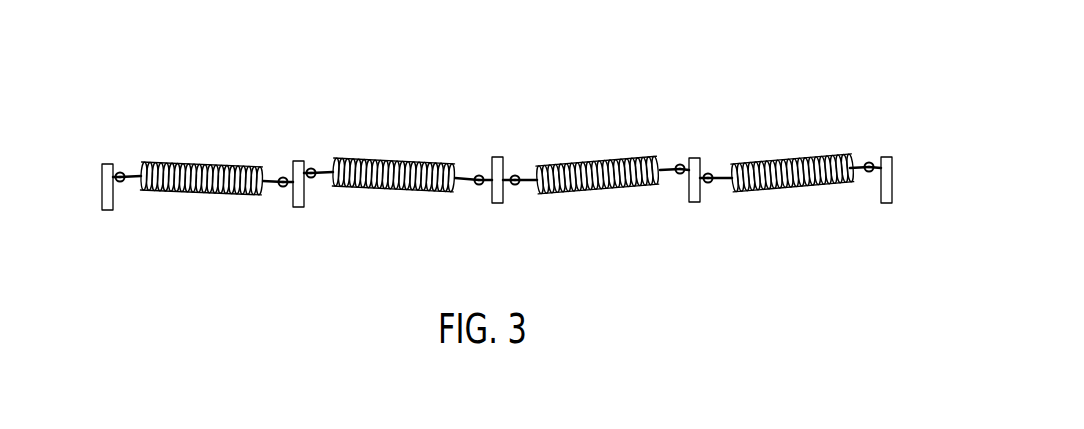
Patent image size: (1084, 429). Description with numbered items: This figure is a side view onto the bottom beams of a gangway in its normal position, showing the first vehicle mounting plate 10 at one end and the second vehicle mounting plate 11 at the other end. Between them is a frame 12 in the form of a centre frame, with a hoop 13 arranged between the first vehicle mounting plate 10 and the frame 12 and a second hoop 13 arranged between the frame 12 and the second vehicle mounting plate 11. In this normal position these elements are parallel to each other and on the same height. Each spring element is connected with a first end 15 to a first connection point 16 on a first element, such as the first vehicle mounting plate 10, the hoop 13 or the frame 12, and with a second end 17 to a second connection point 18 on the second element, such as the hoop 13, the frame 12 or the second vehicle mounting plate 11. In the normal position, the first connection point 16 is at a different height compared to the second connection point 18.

The first vehicle mounting plate 10 is at (102, 177).
The second vehicle mounting plate 11 is at (892, 184).
The frame 12 is at (497, 204).
The hoop 13 is at (297, 208).
The first end 15 is at (125, 206).
The first connection point 16 is at (119, 172).
The second end 17 is at (280, 207).
The second connection point 18 is at (283, 177).